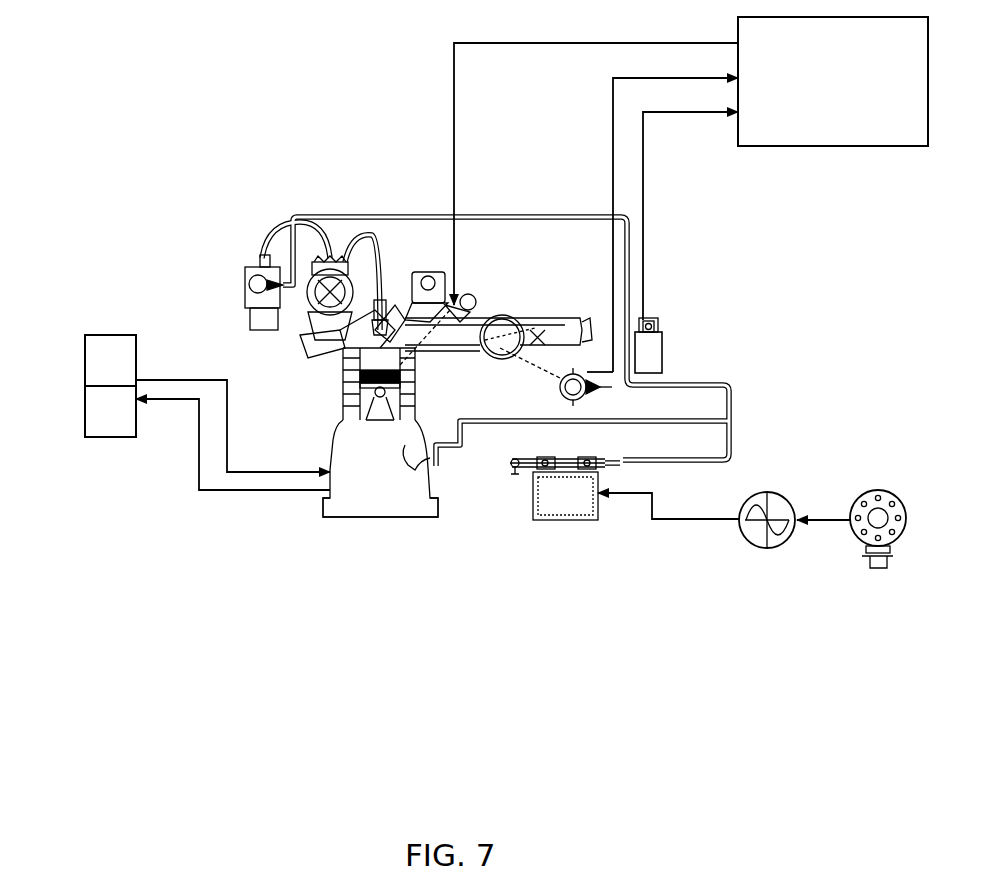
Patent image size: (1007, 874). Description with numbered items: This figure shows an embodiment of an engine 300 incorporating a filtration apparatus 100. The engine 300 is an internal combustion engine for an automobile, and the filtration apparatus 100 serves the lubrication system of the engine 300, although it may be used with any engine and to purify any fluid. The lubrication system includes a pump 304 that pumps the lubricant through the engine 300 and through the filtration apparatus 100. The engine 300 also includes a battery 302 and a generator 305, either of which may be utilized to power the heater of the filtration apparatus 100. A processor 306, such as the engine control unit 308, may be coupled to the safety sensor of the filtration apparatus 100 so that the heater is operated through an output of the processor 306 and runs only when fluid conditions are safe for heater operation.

The filtration apparatus 100 is at (85, 386).
The engine 300 is at (428, 386).
The battery 302 is at (557, 488).
The pump 304 is at (388, 519).
The generator 305 is at (864, 492).
The processor 306 is at (833, 81).
The engine control unit 308 is at (858, 110).